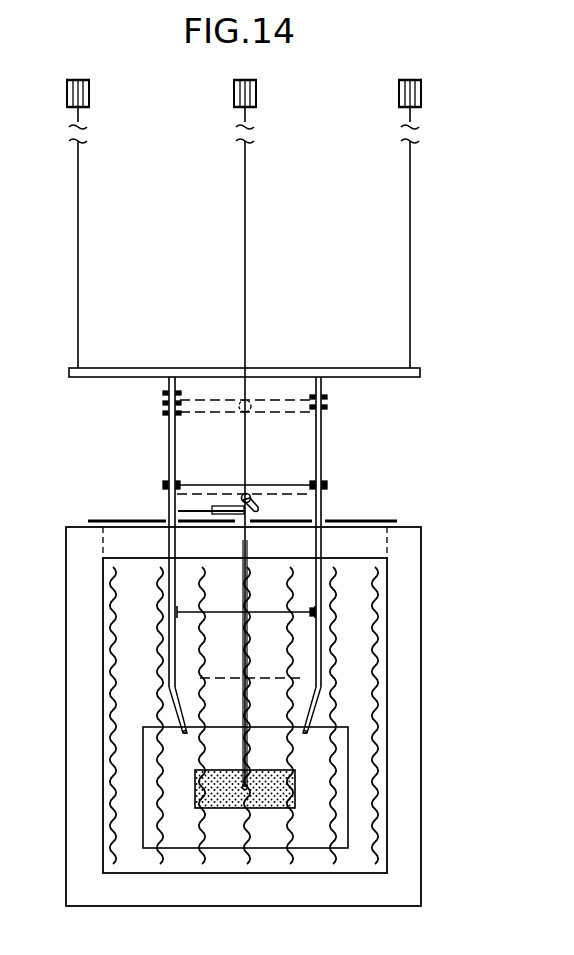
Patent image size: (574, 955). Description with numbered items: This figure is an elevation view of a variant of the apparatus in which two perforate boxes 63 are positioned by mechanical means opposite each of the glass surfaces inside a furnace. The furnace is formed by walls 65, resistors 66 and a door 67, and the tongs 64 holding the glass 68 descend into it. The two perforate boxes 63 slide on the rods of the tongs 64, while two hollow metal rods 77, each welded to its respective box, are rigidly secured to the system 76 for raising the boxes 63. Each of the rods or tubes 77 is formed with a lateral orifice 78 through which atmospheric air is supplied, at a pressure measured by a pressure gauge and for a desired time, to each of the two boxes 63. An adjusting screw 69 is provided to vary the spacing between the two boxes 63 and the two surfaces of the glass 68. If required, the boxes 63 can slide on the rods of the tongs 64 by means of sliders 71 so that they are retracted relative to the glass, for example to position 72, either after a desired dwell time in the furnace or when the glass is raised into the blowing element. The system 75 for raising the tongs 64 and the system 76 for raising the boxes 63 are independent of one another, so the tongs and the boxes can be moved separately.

The perforate boxes 63 is at (295, 802).
The tongs 64 is at (321, 462).
The furnace walls 65 is at (410, 618).
The resistors 66 is at (245, 715).
The door 67 is at (347, 520).
The glass 68 is at (348, 762).
The adjusting screw 69 is at (249, 494).
The sliders 71 is at (322, 489).
The retracted position 72 is at (250, 681).
The system for raising the tongs 75 is at (78, 222).
The system for raising the boxes 76 is at (245, 222).
The rods 77 is at (249, 632).
The lateral orifice 78 is at (221, 505).